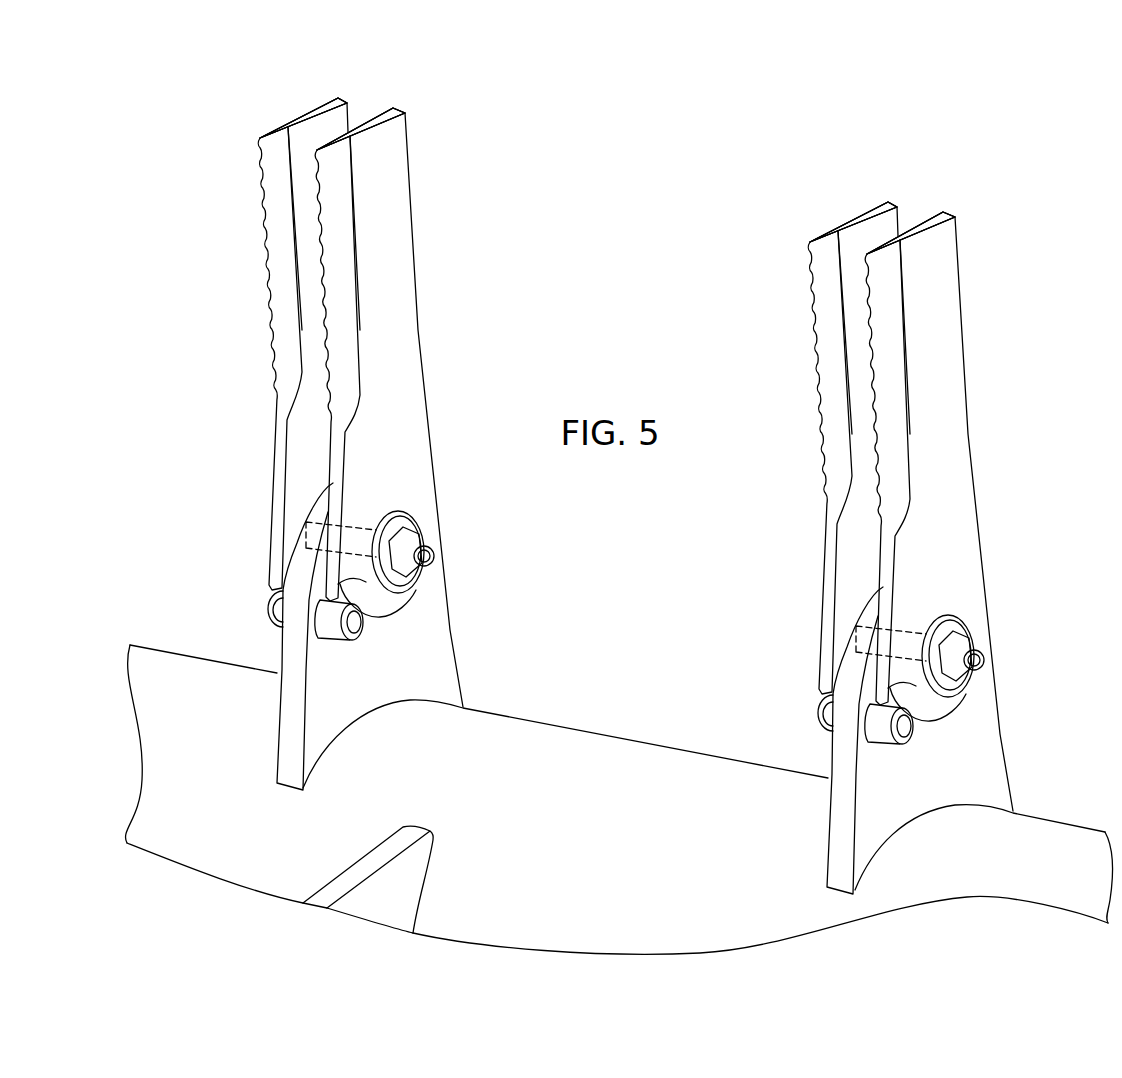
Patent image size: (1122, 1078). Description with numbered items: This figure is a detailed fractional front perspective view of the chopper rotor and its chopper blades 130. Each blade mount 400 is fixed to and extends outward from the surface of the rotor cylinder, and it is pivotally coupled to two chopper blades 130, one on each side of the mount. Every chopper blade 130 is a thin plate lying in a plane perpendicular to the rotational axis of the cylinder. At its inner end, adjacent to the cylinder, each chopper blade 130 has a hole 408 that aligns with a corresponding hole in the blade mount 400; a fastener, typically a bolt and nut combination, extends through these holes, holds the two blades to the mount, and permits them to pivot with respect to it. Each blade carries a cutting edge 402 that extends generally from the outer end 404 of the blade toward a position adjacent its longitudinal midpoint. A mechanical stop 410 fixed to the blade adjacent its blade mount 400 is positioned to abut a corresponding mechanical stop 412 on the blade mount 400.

The chopper blade 130 is at (280, 158).
The blade mount 400 is at (427, 628).
The cutting edge 402 is at (287, 277).
The outer end 404 is at (308, 114).
The hole 408 is at (282, 510).
The mechanical stop 410 is at (270, 577).
The mechanical stop 412 is at (273, 627).